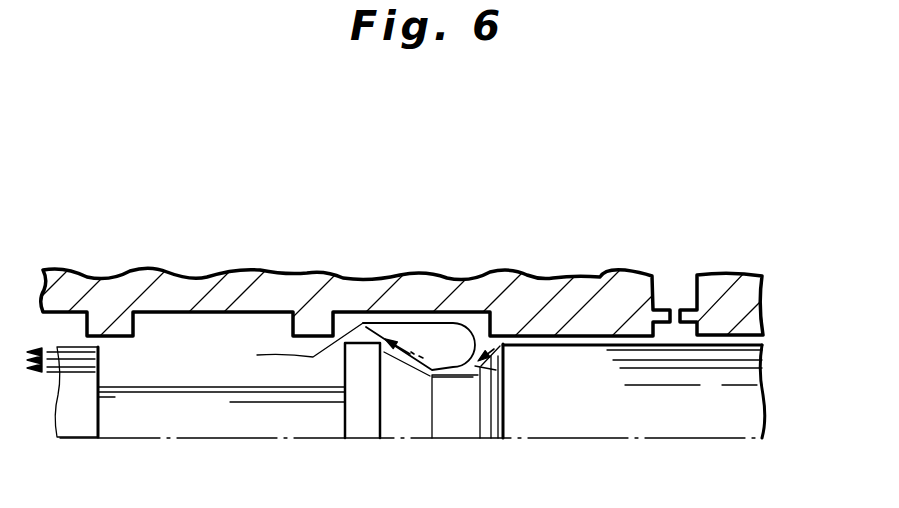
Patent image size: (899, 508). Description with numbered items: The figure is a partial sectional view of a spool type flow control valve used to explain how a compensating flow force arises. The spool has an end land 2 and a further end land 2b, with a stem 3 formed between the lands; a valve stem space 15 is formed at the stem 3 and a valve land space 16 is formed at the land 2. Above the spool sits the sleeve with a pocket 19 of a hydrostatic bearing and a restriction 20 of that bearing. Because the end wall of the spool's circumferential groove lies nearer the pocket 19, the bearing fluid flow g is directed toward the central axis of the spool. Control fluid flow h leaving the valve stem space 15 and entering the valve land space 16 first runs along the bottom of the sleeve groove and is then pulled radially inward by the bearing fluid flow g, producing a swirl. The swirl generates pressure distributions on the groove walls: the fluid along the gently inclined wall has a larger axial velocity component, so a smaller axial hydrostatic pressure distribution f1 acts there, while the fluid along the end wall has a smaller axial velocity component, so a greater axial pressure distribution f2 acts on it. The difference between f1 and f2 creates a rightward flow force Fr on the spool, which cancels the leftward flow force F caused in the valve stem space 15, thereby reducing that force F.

The end land 2 is at (743, 402).
The end land 2b is at (68, 350).
The stem 3 is at (177, 387).
The valve stem space 15 is at (248, 332).
The valve land space 16 is at (452, 335).
The pocket of a hydrostatic bearing 19 is at (687, 332).
The restriction of the hydrostatic bearing 20 is at (677, 317).
The control fluid flow h is at (390, 322).
The bearing fluid flow g is at (500, 348).
The flow force F is at (270, 422).
The flow force Fr is at (492, 416).
The hydrostatic pressure distribution f1 is at (395, 370).
The hydrostatic pressure distribution f2 is at (507, 350).